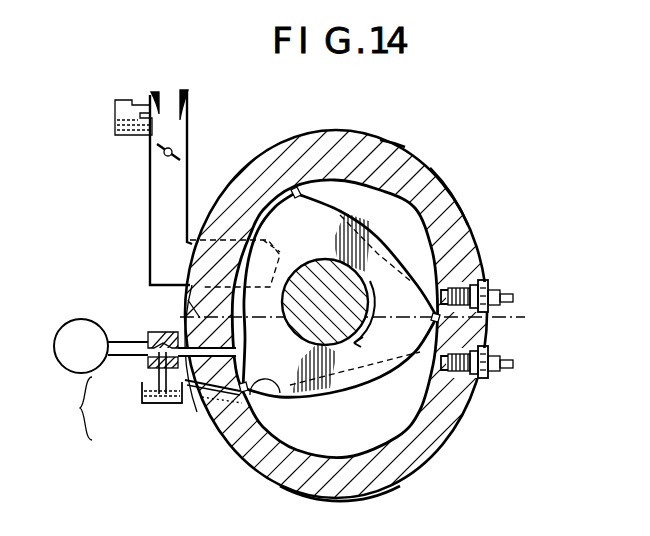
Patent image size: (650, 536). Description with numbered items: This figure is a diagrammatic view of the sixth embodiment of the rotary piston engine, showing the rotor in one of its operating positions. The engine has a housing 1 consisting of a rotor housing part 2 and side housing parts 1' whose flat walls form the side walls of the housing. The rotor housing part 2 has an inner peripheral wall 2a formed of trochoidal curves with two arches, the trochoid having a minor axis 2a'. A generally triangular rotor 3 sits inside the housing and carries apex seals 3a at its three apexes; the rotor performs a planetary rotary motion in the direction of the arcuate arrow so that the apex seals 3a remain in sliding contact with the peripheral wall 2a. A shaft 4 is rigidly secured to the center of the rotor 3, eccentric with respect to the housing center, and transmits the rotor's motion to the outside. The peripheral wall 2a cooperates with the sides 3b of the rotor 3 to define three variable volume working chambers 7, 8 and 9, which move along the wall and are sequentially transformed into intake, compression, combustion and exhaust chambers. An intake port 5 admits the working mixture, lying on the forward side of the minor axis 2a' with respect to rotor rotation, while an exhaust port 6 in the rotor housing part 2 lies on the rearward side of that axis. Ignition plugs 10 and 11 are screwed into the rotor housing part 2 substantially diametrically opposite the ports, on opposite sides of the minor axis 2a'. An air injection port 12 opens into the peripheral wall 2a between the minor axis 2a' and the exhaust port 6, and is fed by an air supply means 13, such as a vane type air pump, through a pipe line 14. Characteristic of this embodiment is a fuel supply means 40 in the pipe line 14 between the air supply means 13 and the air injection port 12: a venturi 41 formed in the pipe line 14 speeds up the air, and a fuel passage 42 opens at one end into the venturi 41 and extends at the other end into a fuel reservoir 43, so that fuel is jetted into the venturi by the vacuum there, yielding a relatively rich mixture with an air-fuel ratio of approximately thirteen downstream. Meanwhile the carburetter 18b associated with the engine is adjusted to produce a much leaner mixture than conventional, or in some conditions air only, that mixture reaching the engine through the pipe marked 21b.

The housing 1 is at (336, 295).
The side housing part 1' is at (445, 183).
The rotor housing part 2 is at (458, 232).
The peripheral wall 2a is at (363, 312).
The minor axis 2a' is at (374, 306).
The rotor 3 is at (368, 357).
The apex seal 3a is at (295, 190).
The side of the rotor 3b is at (267, 210).
The shaft 4 is at (318, 260).
The intake port 5 is at (206, 258).
The exhaust port 6 is at (205, 393).
The working chamber 7 is at (243, 204).
The working chamber 8 is at (395, 200).
The working chamber 9 is at (387, 423).
The ignition plug 10 is at (484, 378).
The ignition plug 11 is at (493, 287).
The air injection port 12 is at (230, 345).
The air supply means 13 is at (77, 322).
The pipe line 14 is at (140, 342).
The carburetter 18b is at (170, 103).
The exhaust pipe 21b is at (150, 222).
The fuel supply means 40 is at (112, 408).
The venturi 41 is at (152, 366).
The fuel passage 42 is at (145, 392).
The fuel reservoir 43 is at (147, 408).